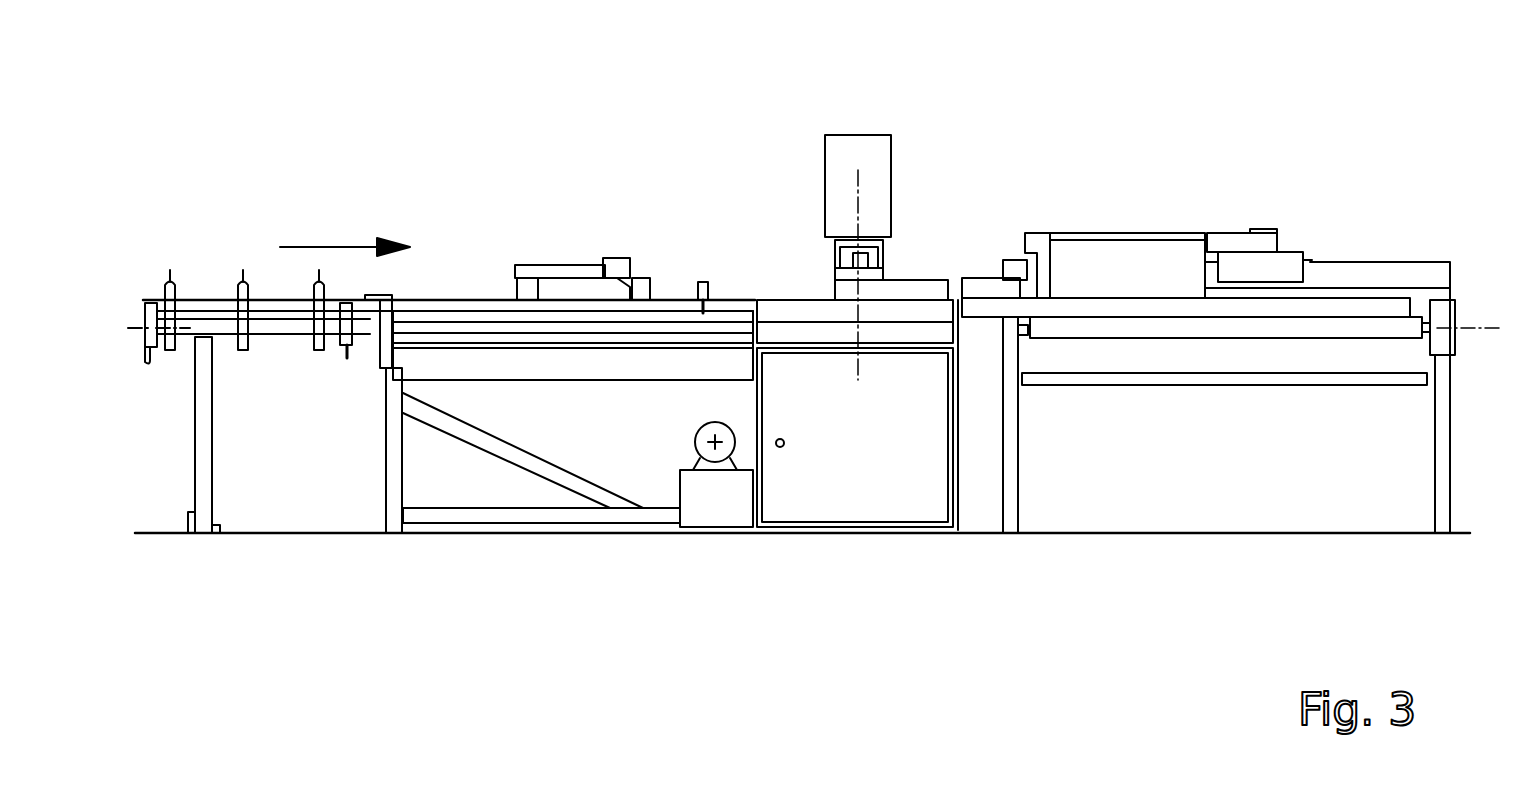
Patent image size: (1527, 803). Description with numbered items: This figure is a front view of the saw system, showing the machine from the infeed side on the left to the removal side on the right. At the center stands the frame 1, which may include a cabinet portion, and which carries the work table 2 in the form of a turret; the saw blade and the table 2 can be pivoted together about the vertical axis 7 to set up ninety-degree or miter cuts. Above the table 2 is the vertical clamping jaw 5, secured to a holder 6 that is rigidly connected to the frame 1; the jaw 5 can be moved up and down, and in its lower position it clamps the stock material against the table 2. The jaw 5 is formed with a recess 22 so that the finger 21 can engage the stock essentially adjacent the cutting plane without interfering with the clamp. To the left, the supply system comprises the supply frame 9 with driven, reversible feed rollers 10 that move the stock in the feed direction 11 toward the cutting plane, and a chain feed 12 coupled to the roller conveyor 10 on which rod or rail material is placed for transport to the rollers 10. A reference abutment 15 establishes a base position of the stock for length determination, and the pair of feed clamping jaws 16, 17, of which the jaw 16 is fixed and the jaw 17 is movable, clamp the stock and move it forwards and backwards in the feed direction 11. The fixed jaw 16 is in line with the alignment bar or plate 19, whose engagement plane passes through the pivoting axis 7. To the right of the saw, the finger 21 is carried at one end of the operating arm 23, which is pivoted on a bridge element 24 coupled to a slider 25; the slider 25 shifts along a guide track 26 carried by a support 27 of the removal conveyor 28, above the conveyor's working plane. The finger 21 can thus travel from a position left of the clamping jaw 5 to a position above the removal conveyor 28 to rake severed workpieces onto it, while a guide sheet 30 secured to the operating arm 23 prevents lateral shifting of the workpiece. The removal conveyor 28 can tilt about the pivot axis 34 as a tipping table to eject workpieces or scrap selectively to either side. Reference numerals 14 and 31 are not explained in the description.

The frame 1 is at (829, 535).
The work table 2 is at (812, 315).
The vertical clamping jaw 5 is at (883, 255).
The holder 6 is at (852, 153).
The vertical axis 7 is at (862, 180).
The supply frame 9 is at (458, 512).
The feed rollers 10 is at (472, 320).
The feed direction 11 is at (327, 247).
The chain feed 12 is at (245, 274).
The stop block 14 is at (695, 300).
The reference abutment 15 is at (703, 282).
The fixed feed clamping jaw 16 is at (643, 283).
The movable feed clamping jaw 17 is at (643, 283).
The alignment bar 19 is at (913, 290).
The finger 21 is at (1048, 300).
The recess 22 is at (833, 262).
The operating arm 23 is at (1133, 235).
The bridge element 24 is at (1262, 230).
The slider 25 is at (1287, 263).
The guide track 26 is at (1333, 278).
The support 27 is at (1432, 487).
The removal conveyor 28 is at (1250, 308).
The guide sheet 30 is at (1118, 275).
The bracket 31 is at (1027, 233).
The pivot axis 34 is at (1487, 327).